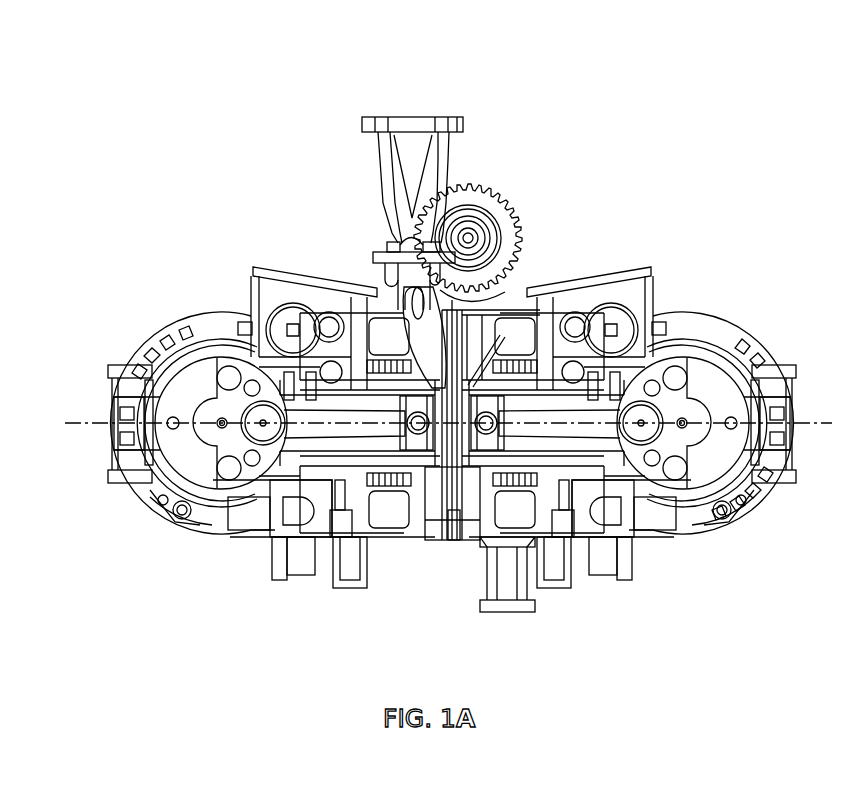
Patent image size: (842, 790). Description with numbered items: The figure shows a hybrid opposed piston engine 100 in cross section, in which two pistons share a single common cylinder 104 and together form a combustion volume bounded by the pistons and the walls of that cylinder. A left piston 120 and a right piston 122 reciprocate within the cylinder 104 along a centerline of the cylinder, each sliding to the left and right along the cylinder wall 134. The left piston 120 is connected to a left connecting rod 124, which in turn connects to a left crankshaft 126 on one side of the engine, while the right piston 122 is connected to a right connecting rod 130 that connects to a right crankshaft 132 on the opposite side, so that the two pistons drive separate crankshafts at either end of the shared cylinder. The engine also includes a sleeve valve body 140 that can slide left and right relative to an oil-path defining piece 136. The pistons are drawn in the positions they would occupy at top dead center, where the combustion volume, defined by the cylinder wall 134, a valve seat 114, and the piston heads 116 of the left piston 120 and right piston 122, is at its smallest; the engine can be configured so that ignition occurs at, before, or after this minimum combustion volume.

The hybrid opposed piston engine 100 is at (80, 163).
The cylinder 104 is at (600, 345).
The valve seat 114 is at (492, 543).
The piston heads 116 is at (428, 522).
The left piston 120 is at (412, 417).
The right piston 122 is at (505, 437).
The left connecting rod 124 is at (362, 418).
The left crankshaft 126 is at (201, 472).
The right connecting rod 130 is at (517, 412).
The right crankshaft 132 is at (697, 470).
The cylinder wall 134 is at (337, 322).
The oil-path defining piece 136 is at (550, 540).
The sleeve valve body 140 is at (388, 449).